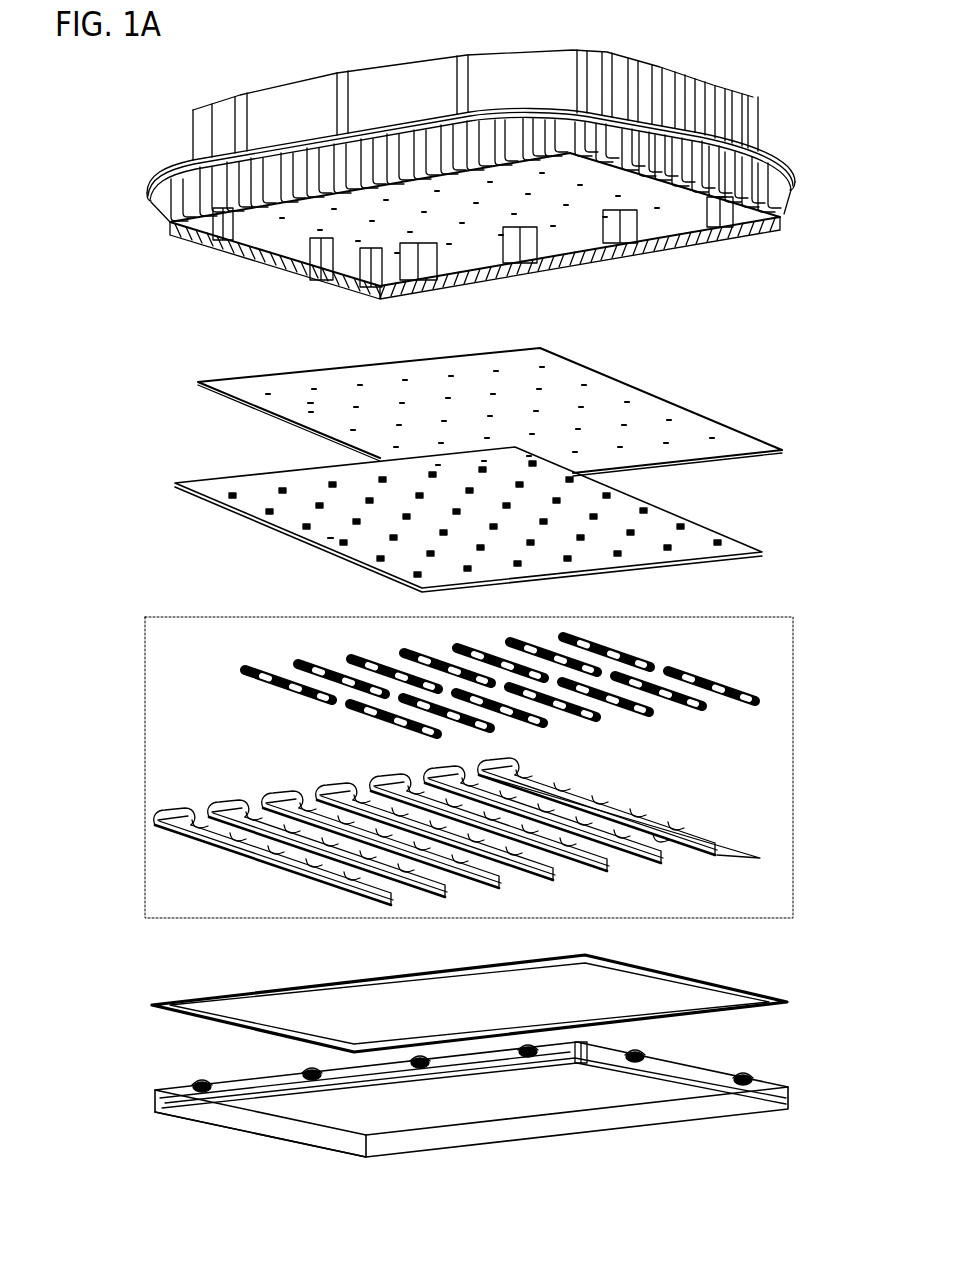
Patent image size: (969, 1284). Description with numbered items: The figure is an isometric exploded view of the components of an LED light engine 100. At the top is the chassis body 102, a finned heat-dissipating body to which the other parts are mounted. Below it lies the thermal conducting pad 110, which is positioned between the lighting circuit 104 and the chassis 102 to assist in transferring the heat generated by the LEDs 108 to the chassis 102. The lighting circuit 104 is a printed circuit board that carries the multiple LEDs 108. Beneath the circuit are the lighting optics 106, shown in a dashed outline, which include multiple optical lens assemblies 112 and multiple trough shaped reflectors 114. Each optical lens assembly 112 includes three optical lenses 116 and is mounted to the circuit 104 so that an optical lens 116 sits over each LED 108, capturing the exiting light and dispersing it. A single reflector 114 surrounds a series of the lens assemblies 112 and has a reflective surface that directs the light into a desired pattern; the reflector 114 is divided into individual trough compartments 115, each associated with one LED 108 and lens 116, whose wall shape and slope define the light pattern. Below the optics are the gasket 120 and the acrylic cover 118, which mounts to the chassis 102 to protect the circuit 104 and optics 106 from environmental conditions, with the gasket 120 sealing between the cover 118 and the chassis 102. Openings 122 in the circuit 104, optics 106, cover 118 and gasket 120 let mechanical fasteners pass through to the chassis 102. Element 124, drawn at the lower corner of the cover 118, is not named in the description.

The LED light engine 100 is at (782, 67).
The chassis body 102 is at (188, 150).
The lighting circuit 104 is at (724, 530).
The lighting optics 106 is at (163, 718).
The LEDs 108 is at (266, 517).
The thermal conducting pad 110 is at (305, 370).
The optical lens assembly 112 is at (267, 682).
The trough shaped reflector 114 is at (613, 812).
The trough compartment 115 is at (661, 841).
The optical lens 116 is at (589, 716).
The acrylic cover 118 is at (710, 1066).
The gasket 120 is at (704, 983).
The openings 122 is at (312, 405).
The housing bottom 124 is at (172, 1110).